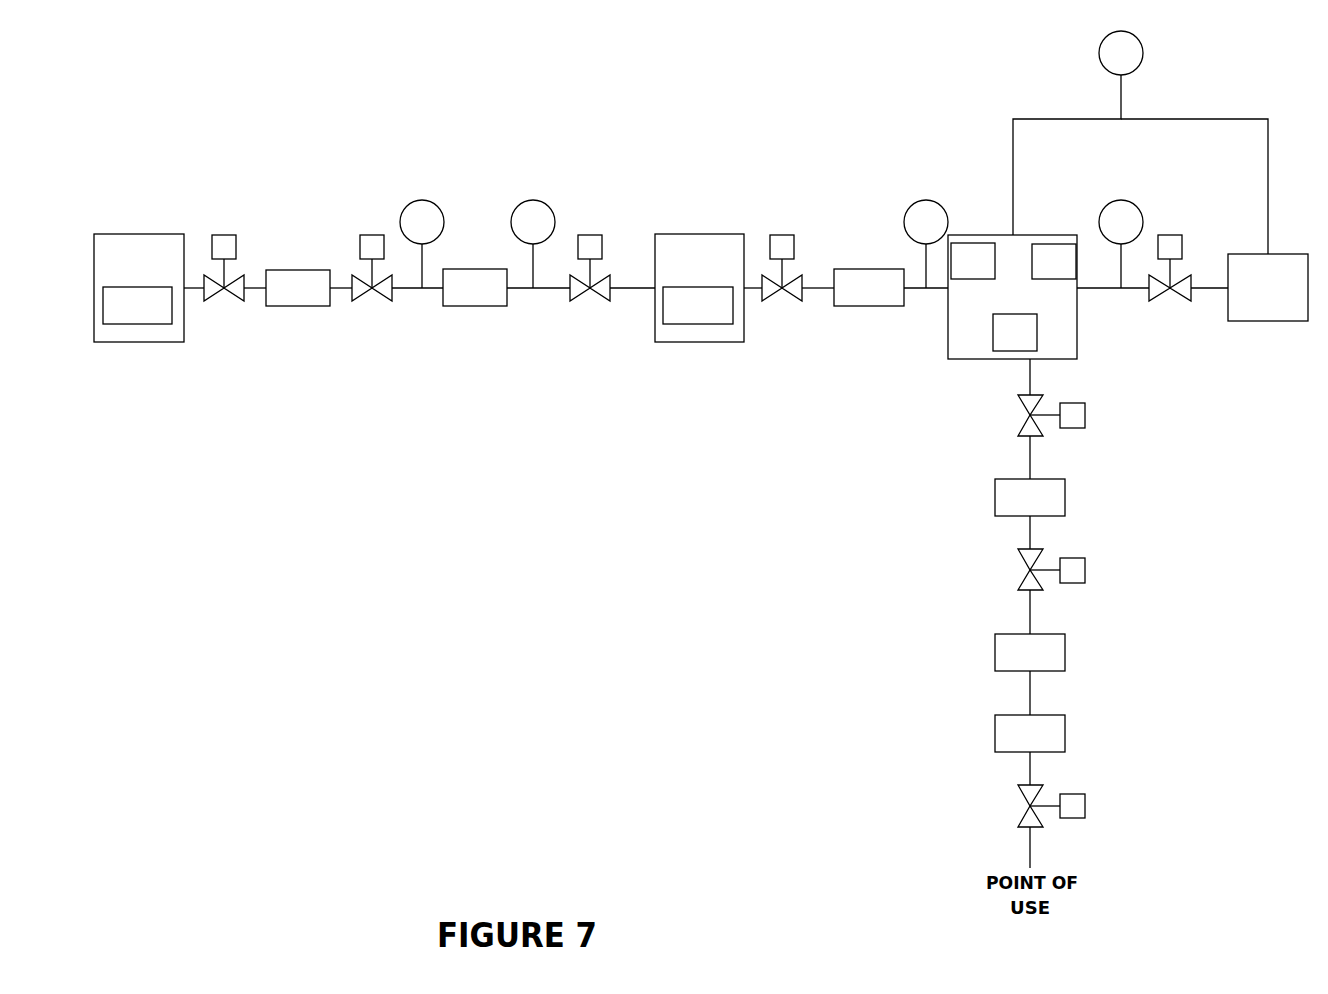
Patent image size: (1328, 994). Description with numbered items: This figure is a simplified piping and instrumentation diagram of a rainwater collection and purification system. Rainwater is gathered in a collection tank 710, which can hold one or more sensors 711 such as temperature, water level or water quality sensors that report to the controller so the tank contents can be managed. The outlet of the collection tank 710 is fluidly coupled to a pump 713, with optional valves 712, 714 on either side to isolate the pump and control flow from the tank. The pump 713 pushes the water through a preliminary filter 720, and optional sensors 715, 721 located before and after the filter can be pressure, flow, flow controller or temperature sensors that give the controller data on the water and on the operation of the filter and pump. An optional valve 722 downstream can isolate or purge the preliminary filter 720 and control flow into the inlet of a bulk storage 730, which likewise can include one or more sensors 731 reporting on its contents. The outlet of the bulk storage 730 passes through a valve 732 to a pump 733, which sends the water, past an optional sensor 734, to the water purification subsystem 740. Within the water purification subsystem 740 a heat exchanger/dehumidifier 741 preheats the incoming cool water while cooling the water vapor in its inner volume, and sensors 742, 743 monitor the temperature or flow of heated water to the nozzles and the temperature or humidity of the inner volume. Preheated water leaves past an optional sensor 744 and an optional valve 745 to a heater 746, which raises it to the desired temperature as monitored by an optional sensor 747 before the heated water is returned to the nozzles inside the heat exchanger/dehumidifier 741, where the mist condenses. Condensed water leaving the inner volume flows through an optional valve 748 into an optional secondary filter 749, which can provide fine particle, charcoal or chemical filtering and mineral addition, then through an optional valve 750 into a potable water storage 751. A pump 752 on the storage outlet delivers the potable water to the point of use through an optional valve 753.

The collection tank 710 is at (139, 288).
The sensors 711 is at (137, 305).
The valve 712 is at (228, 247).
The pump 713 is at (298, 288).
The valve 714 is at (376, 247).
The sensor 715 is at (422, 244).
The preliminary filter 720 is at (475, 287).
The sensor 721 is at (533, 244).
The valve 722 is at (590, 247).
The bulk storage 730 is at (699, 288).
The sensors 731 is at (698, 305).
The valve 732 is at (786, 247).
The pump 733 is at (869, 287).
The sensor 734 is at (926, 244).
The water purification subsystem 740 is at (1012, 297).
The heat exchanger/dehumidifier 741 is at (1015, 332).
The sensor 742 is at (973, 261).
The sensor 743 is at (1054, 261).
The sensor 744 is at (1121, 244).
The valve 745 is at (1170, 247).
The heater 746 is at (1268, 287).
The sensor 747 is at (1140, 142).
The valve 748 is at (1086, 413).
The secondary filter 749 is at (1030, 497).
The valve 750 is at (1086, 568).
The potable water storage 751 is at (1030, 652).
The pump 752 is at (1030, 733).
The valve 753 is at (1086, 804).